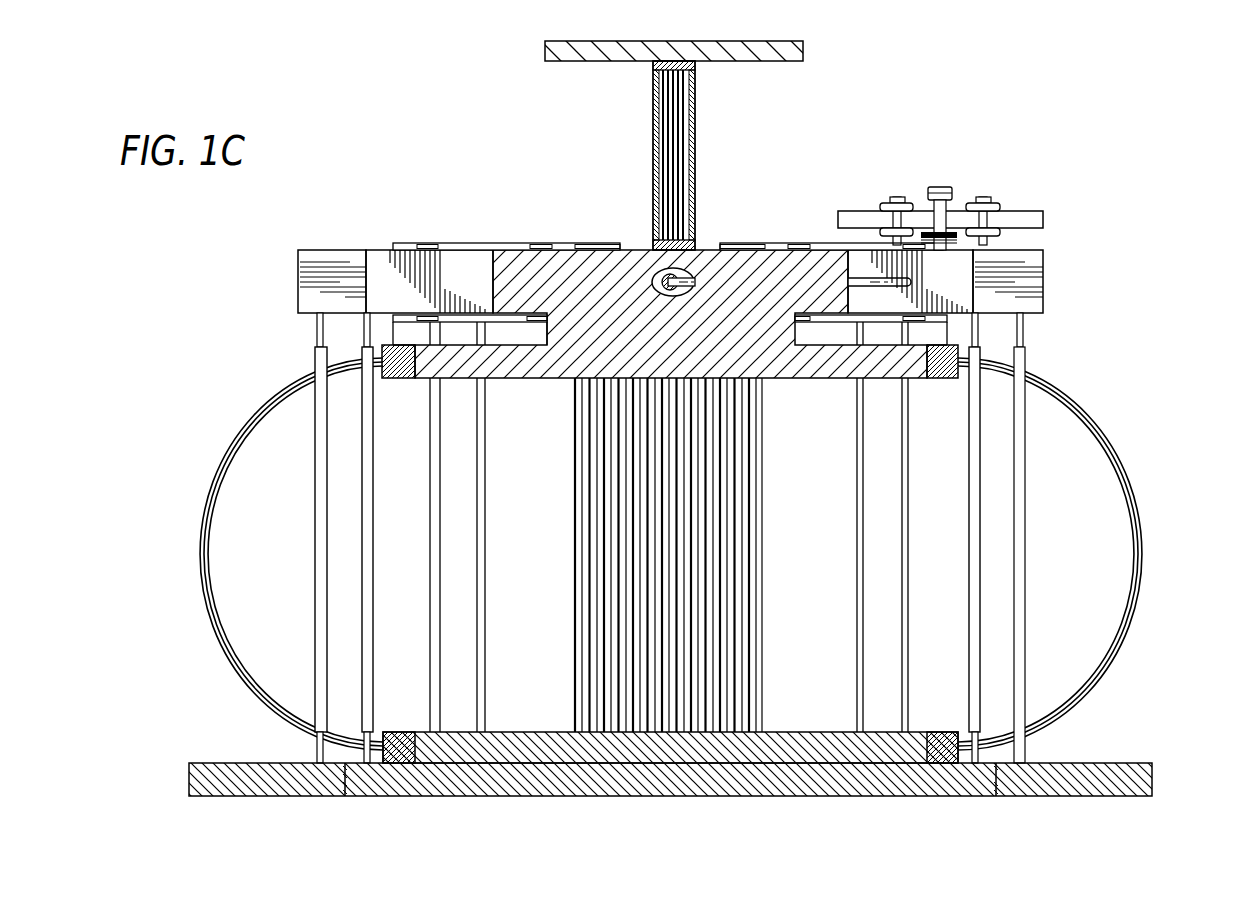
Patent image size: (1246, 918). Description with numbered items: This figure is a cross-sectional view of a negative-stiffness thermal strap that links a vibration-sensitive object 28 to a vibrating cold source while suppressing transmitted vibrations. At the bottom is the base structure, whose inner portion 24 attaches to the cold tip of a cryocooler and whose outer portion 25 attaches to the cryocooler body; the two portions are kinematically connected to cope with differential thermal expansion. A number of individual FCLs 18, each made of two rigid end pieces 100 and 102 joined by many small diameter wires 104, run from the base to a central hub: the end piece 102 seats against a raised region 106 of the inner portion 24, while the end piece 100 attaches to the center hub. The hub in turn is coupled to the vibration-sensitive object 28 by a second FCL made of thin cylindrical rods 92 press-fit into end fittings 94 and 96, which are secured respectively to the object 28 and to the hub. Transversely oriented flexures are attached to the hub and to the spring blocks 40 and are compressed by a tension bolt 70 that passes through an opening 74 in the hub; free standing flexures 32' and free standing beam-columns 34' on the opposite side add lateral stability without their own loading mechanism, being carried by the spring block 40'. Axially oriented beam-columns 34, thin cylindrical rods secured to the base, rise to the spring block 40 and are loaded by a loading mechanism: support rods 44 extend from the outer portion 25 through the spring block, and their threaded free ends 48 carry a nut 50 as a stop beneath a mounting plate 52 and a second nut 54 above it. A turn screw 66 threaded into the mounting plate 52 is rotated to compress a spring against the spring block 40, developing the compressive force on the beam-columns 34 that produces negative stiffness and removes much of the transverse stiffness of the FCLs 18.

The FCL 18 is at (200, 550).
The inner portion of base structure 24 is at (1128, 765).
The outer portion of base structure 25 is at (287, 780).
The vibration-sensitive object 28 is at (545, 50).
The free standing transversely-oriented flexure 32' is at (493, 299).
The beam-column 34 is at (1015, 538).
The free standing beam-column 34' is at (334, 538).
The spring block 40 is at (1035, 281).
The spring block 40' is at (295, 281).
The support rod 44 is at (990, 556).
The free end of support rod 48 is at (896, 197).
The nut 50 is at (882, 232).
The mounting plate 52 is at (1043, 222).
The nut 54 is at (903, 203).
The turn screw 66 is at (940, 187).
The tension bolt 70 is at (697, 277).
The opening 74 is at (679, 292).
The thin cylindrical rod 92 is at (678, 135).
The end fitting 94 is at (697, 64).
The end fitting 96 is at (652, 243).
The rigid end piece 100 is at (398, 378).
The rigid end piece 102 is at (938, 735).
The small diameter wires 104 is at (762, 555).
The raised region 106 is at (818, 740).